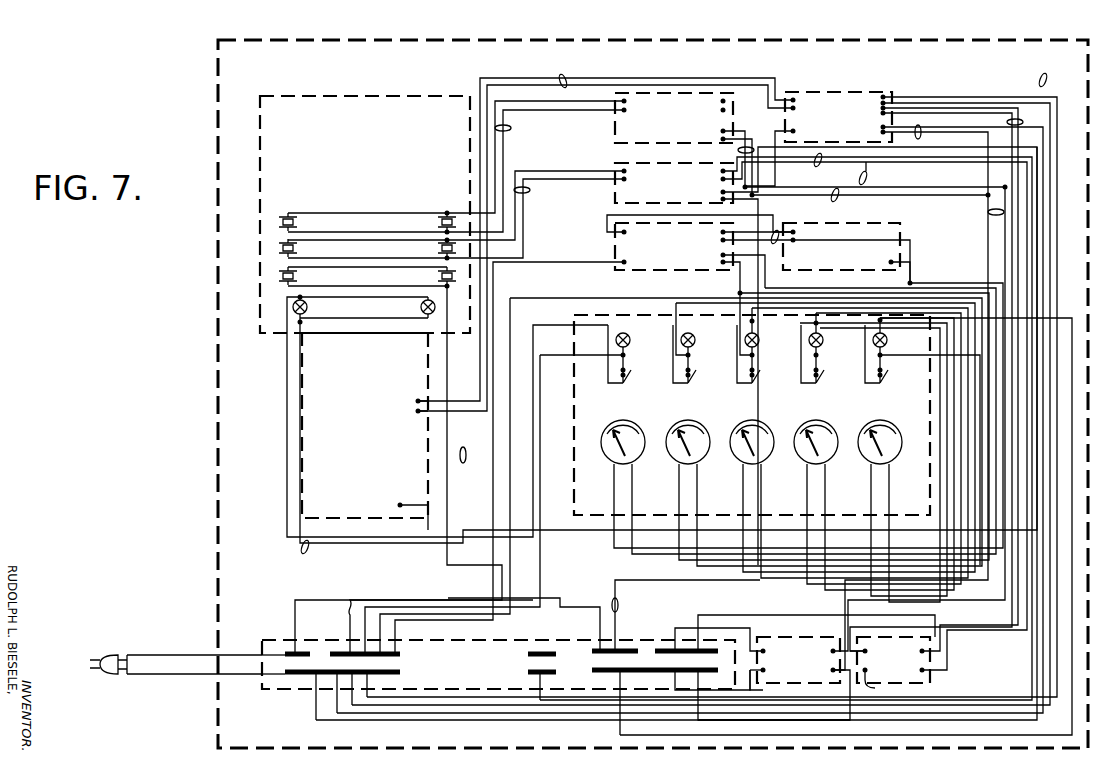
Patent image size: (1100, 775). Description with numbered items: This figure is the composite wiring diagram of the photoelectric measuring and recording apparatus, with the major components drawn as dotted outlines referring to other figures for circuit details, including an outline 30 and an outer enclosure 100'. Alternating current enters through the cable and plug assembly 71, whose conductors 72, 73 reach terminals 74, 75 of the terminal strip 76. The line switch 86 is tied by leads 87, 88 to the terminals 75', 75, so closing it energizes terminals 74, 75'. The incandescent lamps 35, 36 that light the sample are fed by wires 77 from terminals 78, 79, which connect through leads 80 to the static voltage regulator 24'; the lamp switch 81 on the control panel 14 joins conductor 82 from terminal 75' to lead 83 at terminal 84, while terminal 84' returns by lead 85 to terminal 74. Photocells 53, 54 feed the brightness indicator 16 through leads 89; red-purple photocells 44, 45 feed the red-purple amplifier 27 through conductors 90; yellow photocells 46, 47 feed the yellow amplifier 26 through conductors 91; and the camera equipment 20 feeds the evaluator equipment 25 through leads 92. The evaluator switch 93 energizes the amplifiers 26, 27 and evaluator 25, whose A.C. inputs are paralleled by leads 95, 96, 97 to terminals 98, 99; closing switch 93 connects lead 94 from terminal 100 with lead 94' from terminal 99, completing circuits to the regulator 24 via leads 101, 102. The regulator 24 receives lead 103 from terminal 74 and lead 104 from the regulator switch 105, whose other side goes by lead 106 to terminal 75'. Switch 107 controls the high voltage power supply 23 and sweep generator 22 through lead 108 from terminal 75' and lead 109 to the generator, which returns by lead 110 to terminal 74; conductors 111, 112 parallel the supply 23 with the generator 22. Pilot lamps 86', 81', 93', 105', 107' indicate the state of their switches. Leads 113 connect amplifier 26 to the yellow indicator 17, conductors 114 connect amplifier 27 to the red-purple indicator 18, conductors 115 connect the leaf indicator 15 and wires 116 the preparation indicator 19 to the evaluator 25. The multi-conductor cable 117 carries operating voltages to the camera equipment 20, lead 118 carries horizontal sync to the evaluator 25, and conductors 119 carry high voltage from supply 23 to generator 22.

The control panel 14 is at (574, 463).
The leaf indicator 15 is at (640, 462).
The brightness indicator 16 is at (703, 462).
The yellow indicator 17 is at (767, 462).
The red-purple indicator 18 is at (831, 462).
The preparation indicator 19 is at (895, 462).
The camera equipment 20 is at (348, 465).
The sweep generator 22 is at (614, 250).
The high voltage power supply 23 is at (897, 228).
The regulator 24 is at (803, 668).
The static voltage regulator 24' is at (893, 660).
The evaluator equipment 25 is at (868, 92).
The yellow amplifier 26 is at (614, 130).
The red-purple amplifier 27 is at (614, 193).
The power supply section 30 is at (308, 96).
The incandescent lamp 35 is at (308, 308).
The incandescent lamp 36 is at (420, 308).
The red-purple photocell 44 is at (298, 248).
The red-purple photocell 45 is at (438, 248).
The yellow photocell 46 is at (298, 222).
The yellow photocell 47 is at (438, 222).
The photocell 53 is at (298, 276).
The photocell 54 is at (438, 276).
The cable and plug assembly 71 is at (165, 680).
The conductor 72 is at (248, 652).
The conductor 73 is at (246, 678).
The terminal 74 is at (298, 680).
The terminal 75 is at (303, 636).
The terminal 75' is at (385, 655).
The terminal strip 76 is at (458, 675).
The wires 77 is at (302, 552).
The terminal 78 is at (526, 654).
The terminal 79 is at (526, 672).
The leads 80 is at (604, 598).
The lamp switch 81 is at (890, 357).
The indicating lamp 81' is at (894, 333).
The conductor 82 is at (862, 352).
The lead 83 is at (965, 352).
The terminal 84 is at (873, 647).
The terminal 84' is at (883, 685).
The lead 85 is at (860, 718).
The line switch 86 is at (633, 357).
The indicating lamp 86' is at (636, 335).
The lead 87 is at (555, 326).
The lead 88 is at (542, 358).
The leads 89 is at (668, 345).
The conductors 90 is at (535, 214).
The conductors 91 is at (535, 166).
The leads 92 is at (605, 231).
The evaluator switch 93 is at (825, 357).
The indicating lamp 93' is at (829, 330).
The lead 94 is at (676, 433).
The lead 94' is at (767, 325).
The leads 95 is at (728, 158).
The leads 96 is at (802, 174).
The leads 97 is at (921, 137).
The terminal 98 is at (660, 670).
The terminal 99 is at (600, 648).
The terminal 100 is at (795, 642).
The cabinet 100' is at (653, 394).
The lead 101 is at (731, 626).
The lead 102 is at (846, 690).
The lead 103 is at (770, 686).
The lead 104 is at (784, 300).
The regulator switch 105 is at (702, 354).
The indicating lamp 105' is at (706, 335).
The lead 106 is at (601, 353).
The switch 107 is at (767, 357).
The indicating lamp 107' is at (770, 327).
The lead 108 is at (704, 332).
The lead 109 is at (735, 278).
The lead 110 is at (750, 262).
The conductor 111 is at (863, 261).
The conductor 112 is at (916, 270).
The leads 113 is at (786, 420).
The conductors 114 is at (866, 180).
The conductors 115 is at (1048, 80).
The wires 116 is at (1040, 128).
The multi-conductor cable 117 is at (556, 258).
The lead 118 is at (751, 382).
The conductors 119 is at (772, 228).